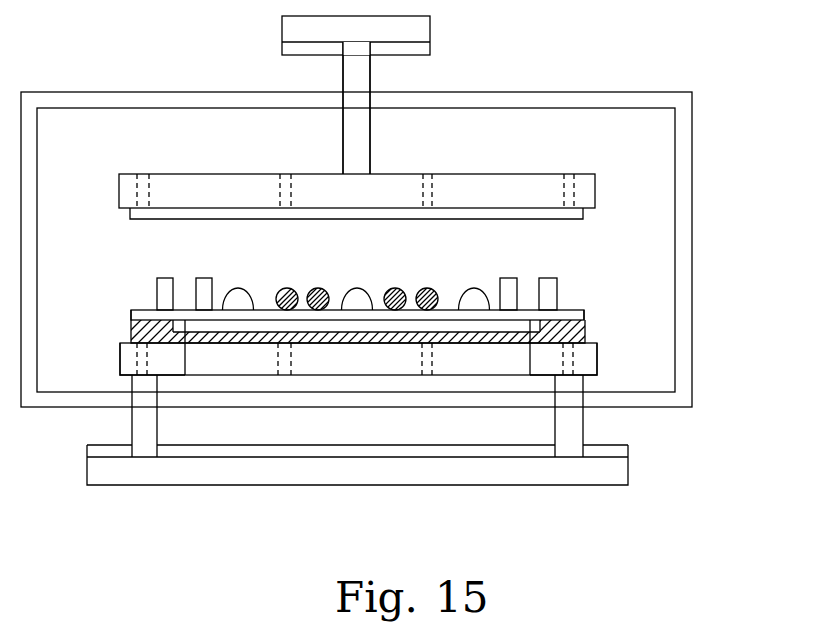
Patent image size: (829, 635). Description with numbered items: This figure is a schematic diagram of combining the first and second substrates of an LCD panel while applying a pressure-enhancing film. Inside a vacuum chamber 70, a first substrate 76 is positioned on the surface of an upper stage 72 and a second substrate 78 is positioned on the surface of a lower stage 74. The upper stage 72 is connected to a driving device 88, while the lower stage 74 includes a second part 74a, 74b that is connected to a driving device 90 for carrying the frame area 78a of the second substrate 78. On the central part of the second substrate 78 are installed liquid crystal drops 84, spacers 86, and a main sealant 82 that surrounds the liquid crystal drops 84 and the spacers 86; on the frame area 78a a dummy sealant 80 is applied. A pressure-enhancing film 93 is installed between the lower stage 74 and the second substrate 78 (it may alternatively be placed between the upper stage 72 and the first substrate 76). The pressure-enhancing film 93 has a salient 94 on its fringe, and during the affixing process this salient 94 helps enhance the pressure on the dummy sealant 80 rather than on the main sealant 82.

The vacuum chamber 70 is at (688, 262).
The upper stage 72 is at (595, 191).
The lower stage 74 is at (375, 363).
The second part of the lower stage 74a is at (597, 358).
The second part of the lower stage 74b is at (120, 358).
The first substrate 76 is at (583, 215).
The second substrate 78 is at (380, 315).
The frame area 78a is at (131, 314).
The dummy sealant 80 is at (164, 303).
The main sealant 82 is at (207, 303).
The liquid crystal drops 84 is at (248, 305).
The spacers 86 is at (290, 310).
The driving device 88 is at (430, 31).
The driving device 90 is at (628, 472).
The pressure-enhancing film 93 is at (402, 337).
The salient 94 is at (133, 332).